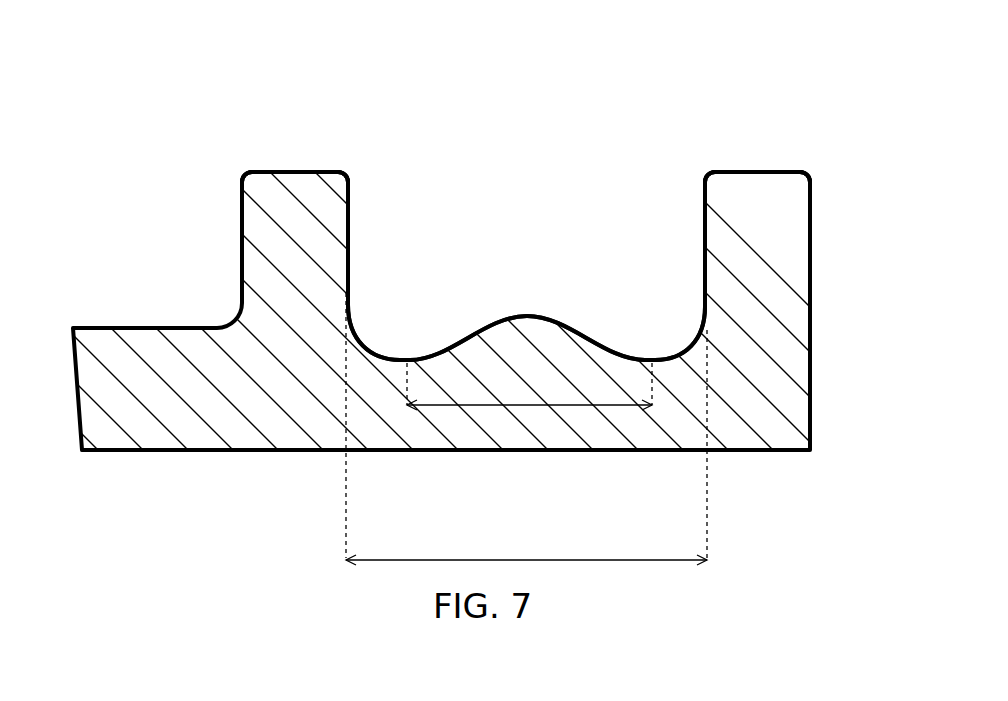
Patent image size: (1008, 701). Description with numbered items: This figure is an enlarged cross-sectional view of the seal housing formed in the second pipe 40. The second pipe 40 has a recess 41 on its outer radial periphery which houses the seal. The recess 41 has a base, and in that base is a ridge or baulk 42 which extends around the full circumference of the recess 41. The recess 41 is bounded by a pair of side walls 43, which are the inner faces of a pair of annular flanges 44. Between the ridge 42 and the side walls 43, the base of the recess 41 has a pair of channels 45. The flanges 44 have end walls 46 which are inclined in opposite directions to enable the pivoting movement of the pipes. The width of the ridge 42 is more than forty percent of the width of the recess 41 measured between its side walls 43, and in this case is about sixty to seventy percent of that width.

The second pipe 40 is at (210, 403).
The recess 41 is at (532, 235).
The ridge 42 is at (498, 317).
The side walls 43 is at (352, 205).
The annular flanges 44 is at (290, 168).
The channels 45 is at (385, 355).
The end walls 46 is at (322, 163).